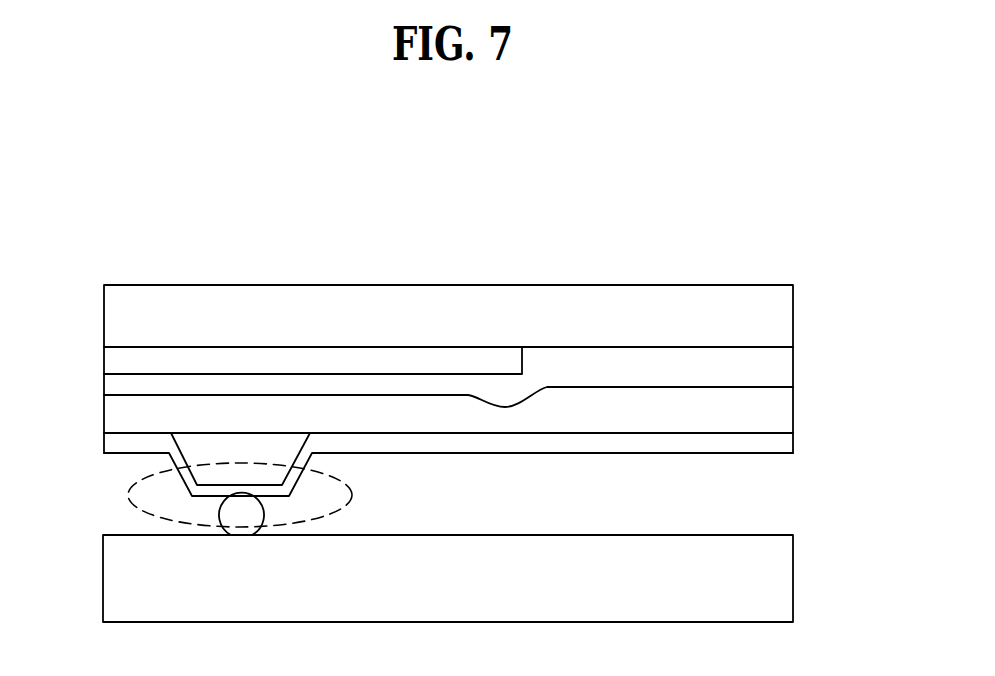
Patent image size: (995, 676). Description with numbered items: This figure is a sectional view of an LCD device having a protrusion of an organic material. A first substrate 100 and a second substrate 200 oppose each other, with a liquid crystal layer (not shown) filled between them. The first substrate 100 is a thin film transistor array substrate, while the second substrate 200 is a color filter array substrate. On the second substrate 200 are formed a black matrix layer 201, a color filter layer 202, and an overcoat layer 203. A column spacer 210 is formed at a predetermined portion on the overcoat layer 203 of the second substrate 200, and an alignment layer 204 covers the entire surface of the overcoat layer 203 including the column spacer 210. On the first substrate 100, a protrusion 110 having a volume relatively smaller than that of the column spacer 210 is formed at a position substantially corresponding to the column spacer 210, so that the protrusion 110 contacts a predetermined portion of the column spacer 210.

The first substrate 100 is at (782, 571).
The protrusion 110 is at (232, 515).
The second substrate 200 is at (782, 316).
The black matrix layer 201 is at (115, 359).
The color filter layer 202 is at (782, 368).
The overcoat layer 203 is at (782, 412).
The alignment layer 204 is at (782, 447).
The column spacer 210 is at (207, 442).